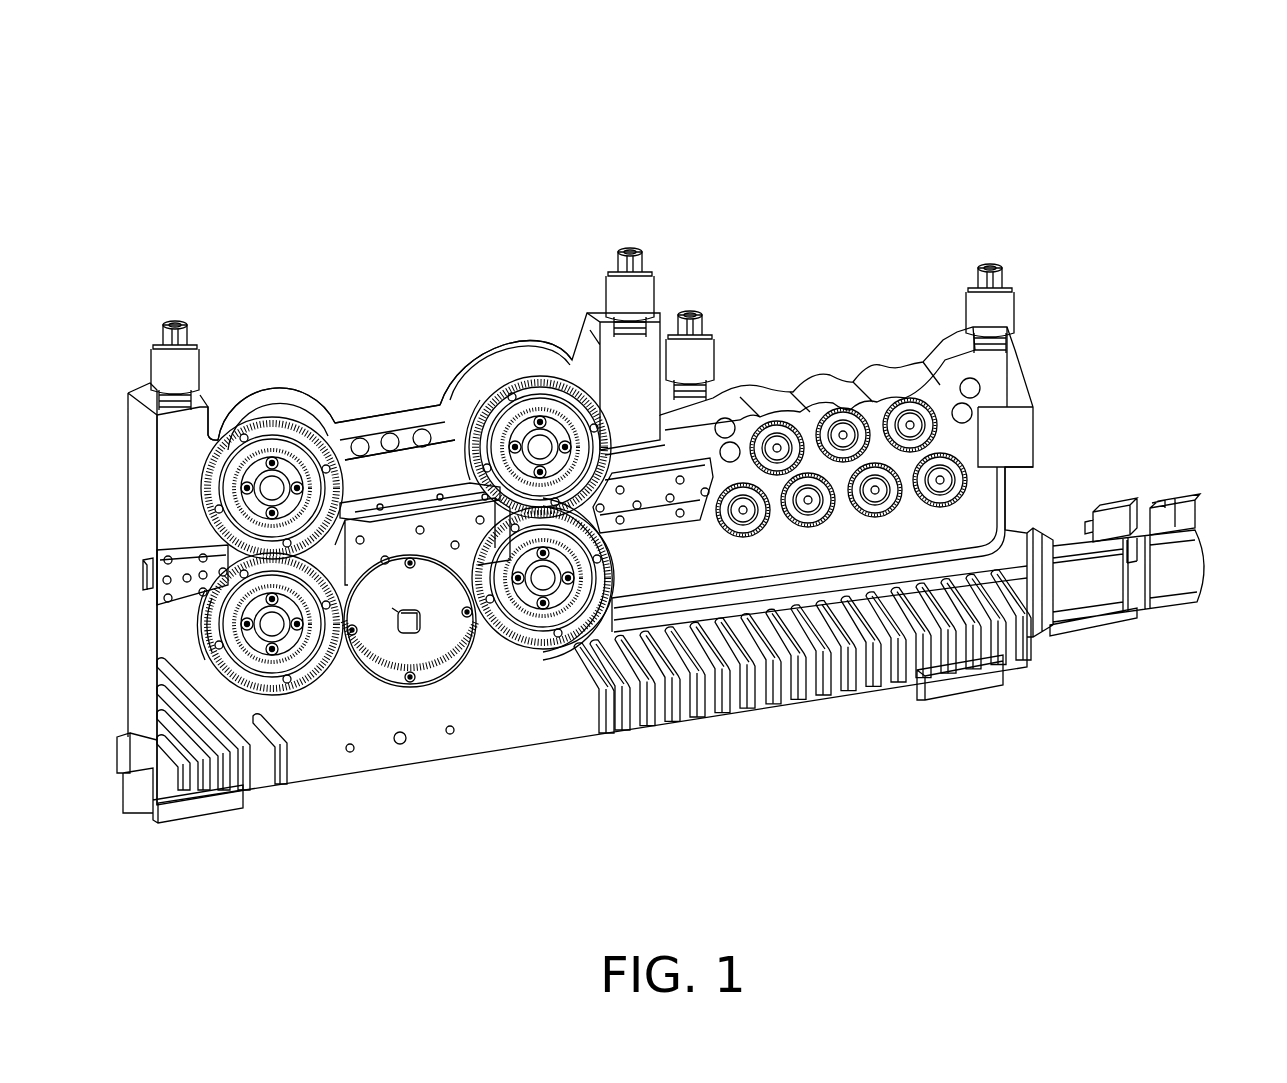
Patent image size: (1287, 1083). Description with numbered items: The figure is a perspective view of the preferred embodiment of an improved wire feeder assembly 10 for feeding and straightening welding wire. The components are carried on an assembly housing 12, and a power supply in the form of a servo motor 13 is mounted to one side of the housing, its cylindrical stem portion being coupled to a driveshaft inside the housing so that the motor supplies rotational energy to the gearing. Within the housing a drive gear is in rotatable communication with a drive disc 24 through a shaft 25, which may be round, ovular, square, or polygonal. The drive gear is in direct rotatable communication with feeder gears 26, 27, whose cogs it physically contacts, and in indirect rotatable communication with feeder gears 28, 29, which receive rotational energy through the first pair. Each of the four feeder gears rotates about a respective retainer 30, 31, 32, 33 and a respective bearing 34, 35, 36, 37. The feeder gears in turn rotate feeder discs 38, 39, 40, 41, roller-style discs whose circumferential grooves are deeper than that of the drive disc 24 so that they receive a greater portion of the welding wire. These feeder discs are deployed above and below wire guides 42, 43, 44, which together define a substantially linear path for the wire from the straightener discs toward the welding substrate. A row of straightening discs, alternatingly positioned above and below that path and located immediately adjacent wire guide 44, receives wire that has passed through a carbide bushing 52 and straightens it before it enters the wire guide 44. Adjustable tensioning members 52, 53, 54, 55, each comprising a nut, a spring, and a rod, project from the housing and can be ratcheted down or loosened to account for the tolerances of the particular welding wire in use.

The wire feeder assembly 10 is at (100, 128).
The assembly housing 12 is at (511, 740).
The servo motor 13 is at (1108, 500).
The drive disc 24 is at (438, 680).
The shaft 25 is at (392, 608).
The feeder gear 26 is at (293, 692).
The feeder gear 27 is at (545, 658).
The feeder gear 28 is at (260, 400).
The feeder gear 29 is at (525, 408).
The retainer 30 is at (320, 680).
The retainer 31 is at (482, 655).
The retainer 32 is at (218, 476).
The retainer 33 is at (560, 372).
The bearing 34 is at (210, 630).
The bearing 35 is at (612, 560).
The bearing 36 is at (238, 443).
The bearing 37 is at (490, 420).
The feeder disc 38 is at (440, 518).
The feeder disc 39 is at (608, 466).
The feeder disc 40 is at (330, 425).
The feeder disc 41 is at (603, 398).
The wire guide 42 is at (186, 562).
The wire guide 43 is at (445, 508).
The wire guide 44 is at (692, 515).
The adjustable tensioning member 52 is at (996, 268).
The adjustable tensioning member 53 is at (692, 315).
The adjustable tensioning member 54 is at (633, 250).
The adjustable tensioning member 55 is at (176, 322).